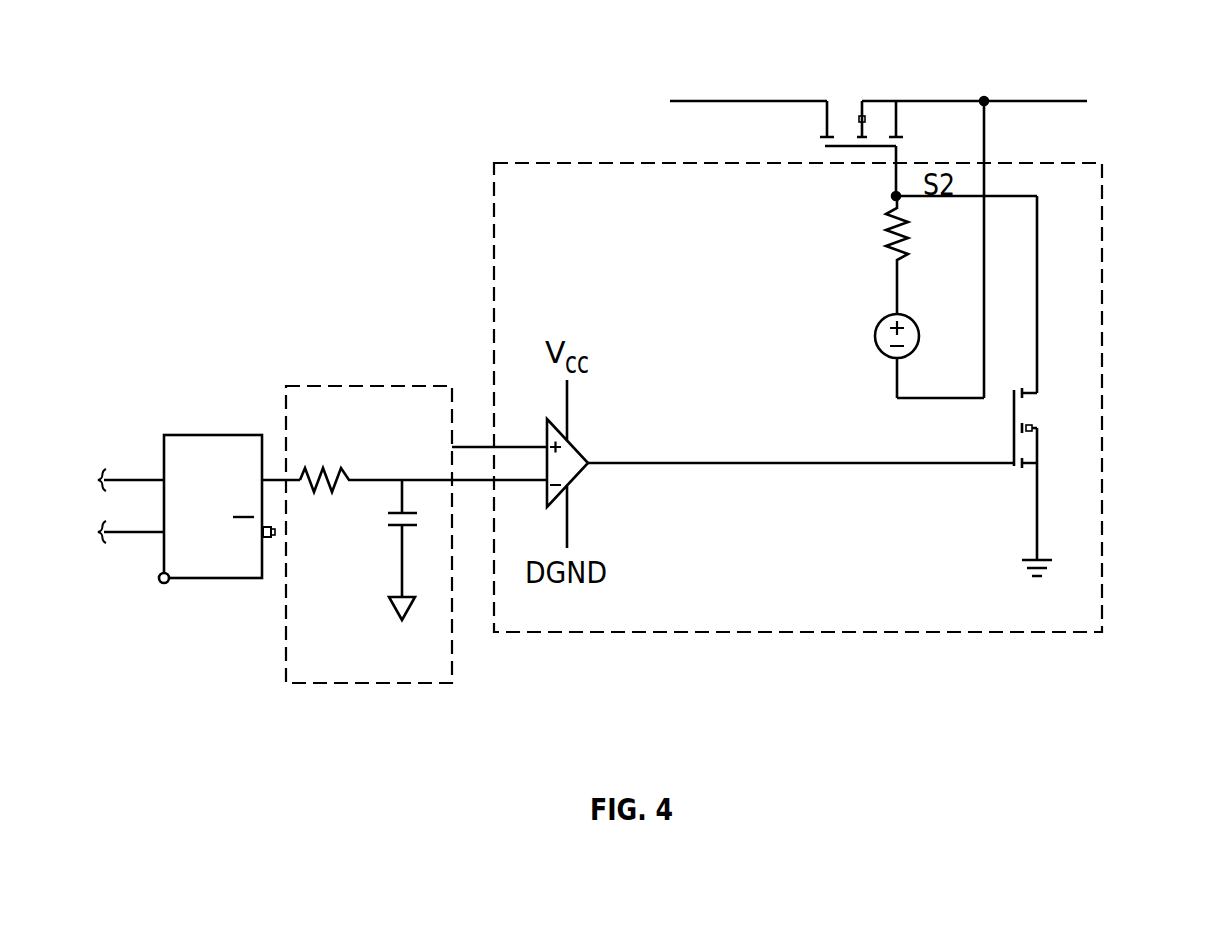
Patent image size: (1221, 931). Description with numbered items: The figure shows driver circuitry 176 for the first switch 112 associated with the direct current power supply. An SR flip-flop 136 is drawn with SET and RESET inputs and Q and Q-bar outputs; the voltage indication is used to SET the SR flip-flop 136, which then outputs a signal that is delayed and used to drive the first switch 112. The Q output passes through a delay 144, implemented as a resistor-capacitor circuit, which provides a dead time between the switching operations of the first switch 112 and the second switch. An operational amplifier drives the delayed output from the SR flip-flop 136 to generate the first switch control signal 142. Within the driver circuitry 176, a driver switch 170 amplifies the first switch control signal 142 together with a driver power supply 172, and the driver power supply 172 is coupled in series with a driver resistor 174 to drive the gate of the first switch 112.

The first switch 112 is at (829, 85).
The SR flip-flop 136 is at (213, 435).
The first switch control signal 142 is at (648, 462).
The delay 144 is at (396, 692).
The driver switch 170 is at (1063, 393).
The driver power supply 172 is at (878, 321).
The driver resistor 174 is at (890, 219).
The driver circuitry 176 is at (645, 154).